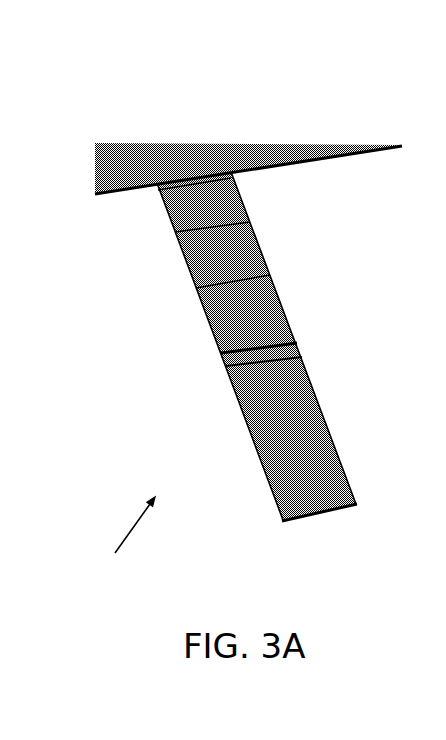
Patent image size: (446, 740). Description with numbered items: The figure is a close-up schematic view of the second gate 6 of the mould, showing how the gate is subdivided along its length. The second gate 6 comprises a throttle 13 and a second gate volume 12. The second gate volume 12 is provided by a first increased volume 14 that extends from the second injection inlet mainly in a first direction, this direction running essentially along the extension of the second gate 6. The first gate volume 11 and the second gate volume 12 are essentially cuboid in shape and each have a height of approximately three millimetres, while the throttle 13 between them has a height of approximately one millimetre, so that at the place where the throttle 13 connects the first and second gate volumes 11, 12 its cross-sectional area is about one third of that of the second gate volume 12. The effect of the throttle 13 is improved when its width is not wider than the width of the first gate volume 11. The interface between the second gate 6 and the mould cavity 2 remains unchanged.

The mould cavity 2 is at (137, 160).
The second gate 6 is at (121, 547).
The first gate volume 11 is at (217, 262).
The second gate volume 12 is at (255, 430).
The throttle 13 is at (297, 347).
The first increased volume 14 is at (312, 477).